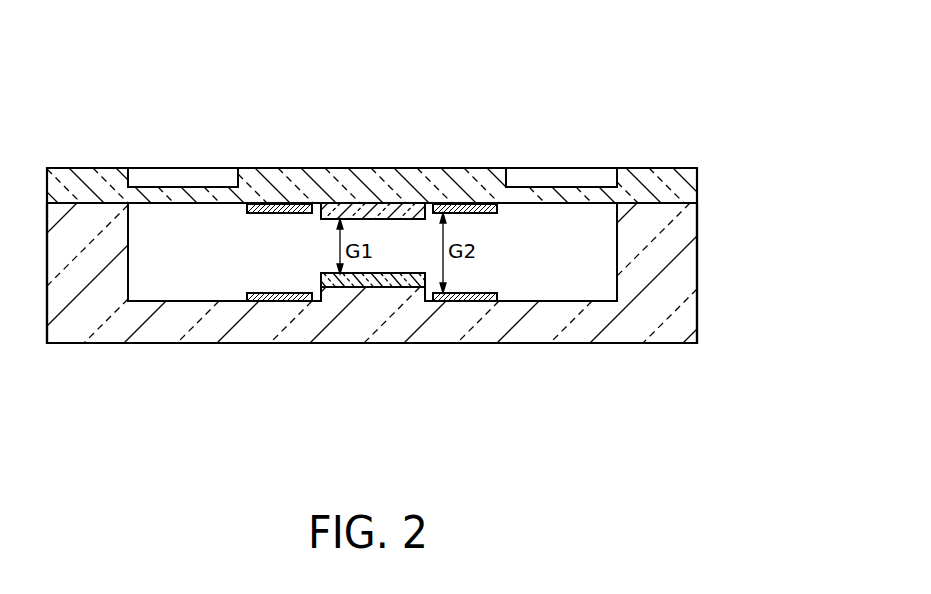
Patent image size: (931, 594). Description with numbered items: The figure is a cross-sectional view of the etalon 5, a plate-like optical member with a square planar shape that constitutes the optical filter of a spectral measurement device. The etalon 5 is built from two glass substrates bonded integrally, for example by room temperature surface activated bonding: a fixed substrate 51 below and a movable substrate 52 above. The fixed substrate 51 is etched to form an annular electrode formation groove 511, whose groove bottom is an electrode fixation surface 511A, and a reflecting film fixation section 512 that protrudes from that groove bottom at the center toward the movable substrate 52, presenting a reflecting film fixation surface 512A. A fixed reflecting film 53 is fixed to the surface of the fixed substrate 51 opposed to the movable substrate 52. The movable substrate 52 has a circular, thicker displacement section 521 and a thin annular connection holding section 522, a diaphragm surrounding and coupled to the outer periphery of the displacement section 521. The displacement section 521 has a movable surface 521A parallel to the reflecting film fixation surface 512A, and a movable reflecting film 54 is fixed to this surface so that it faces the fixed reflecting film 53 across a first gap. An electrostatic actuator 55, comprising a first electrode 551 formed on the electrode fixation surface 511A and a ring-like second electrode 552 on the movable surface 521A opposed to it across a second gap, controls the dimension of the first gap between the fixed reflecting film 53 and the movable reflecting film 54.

The etalon 5 is at (704, 70).
The fixed substrate 51 is at (668, 335).
The electrode formation groove 511 is at (600, 300).
The electrode fixation surface 511A is at (537, 300).
The reflecting film fixation section 512 is at (418, 293).
The reflecting film fixation surface 512A is at (360, 290).
The movable substrate 52 is at (660, 175).
The displacement section 521 is at (287, 180).
The movable surface 521A is at (313, 214).
The connection holding section 522 is at (185, 190).
The fixed reflecting film 53 is at (380, 282).
The movable reflecting film 54 is at (362, 209).
The electrostatic actuator 55 is at (501, 178).
The first electrode 551 is at (482, 291).
The second electrode 552 is at (465, 203).